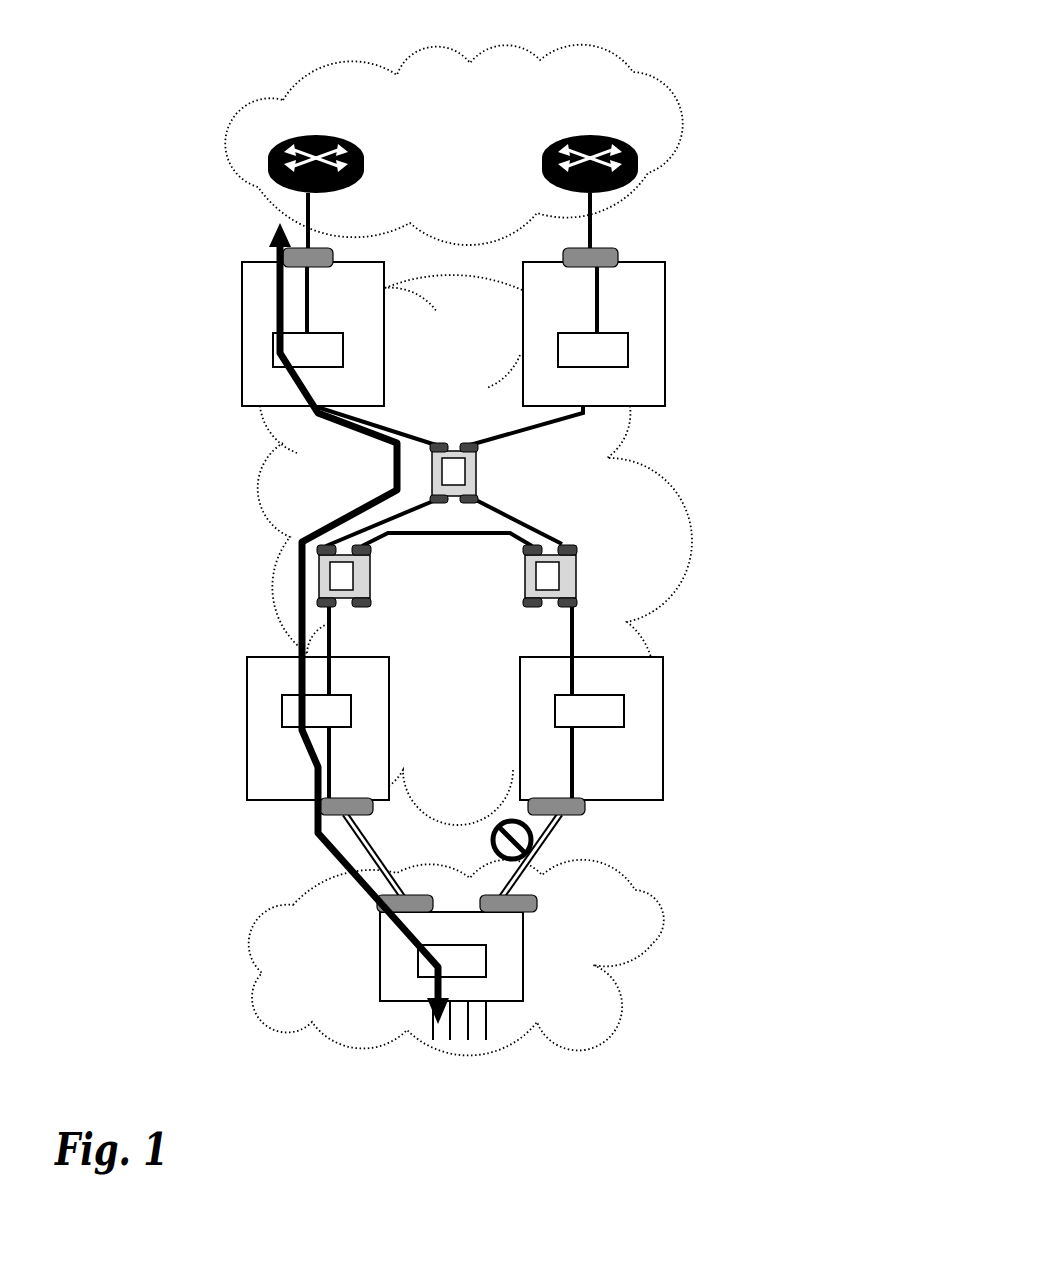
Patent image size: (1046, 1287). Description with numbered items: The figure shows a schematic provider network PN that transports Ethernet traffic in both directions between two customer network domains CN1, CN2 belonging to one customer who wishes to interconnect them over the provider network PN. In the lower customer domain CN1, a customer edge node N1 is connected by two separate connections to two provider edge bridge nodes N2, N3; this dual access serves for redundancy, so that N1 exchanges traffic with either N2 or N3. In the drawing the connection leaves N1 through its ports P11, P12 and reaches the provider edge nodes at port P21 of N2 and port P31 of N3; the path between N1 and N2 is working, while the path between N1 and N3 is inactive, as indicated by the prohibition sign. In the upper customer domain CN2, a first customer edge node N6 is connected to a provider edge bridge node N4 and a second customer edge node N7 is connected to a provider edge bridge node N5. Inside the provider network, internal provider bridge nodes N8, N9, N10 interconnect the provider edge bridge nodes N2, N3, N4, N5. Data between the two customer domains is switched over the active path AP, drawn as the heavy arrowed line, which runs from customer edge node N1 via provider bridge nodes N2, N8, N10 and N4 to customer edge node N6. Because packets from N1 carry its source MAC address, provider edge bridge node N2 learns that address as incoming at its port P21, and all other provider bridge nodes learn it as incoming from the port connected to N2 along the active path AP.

The customer network domain CN2 is at (499, 145).
The customer network domain CN1 is at (528, 958).
The provider network PN is at (524, 550).
The customer edge node N1 is at (499, 993).
The provider edge bridge node N2 is at (264, 724).
The provider edge bridge node N3 is at (637, 703).
The provider edge bridge node N4 is at (268, 311).
The provider edge bridge node N5 is at (647, 311).
The customer edge node N6 is at (274, 142).
The customer edge node N7 is at (642, 147).
The provider bridge node N8 is at (283, 570).
The provider bridge node N9 is at (591, 574).
The provider bridge node N10 is at (505, 473).
The port P11 is at (347, 928).
The port P12 is at (565, 924).
The port P21 is at (294, 835).
The port P31 is at (608, 828).
The active path AP is at (344, 623).